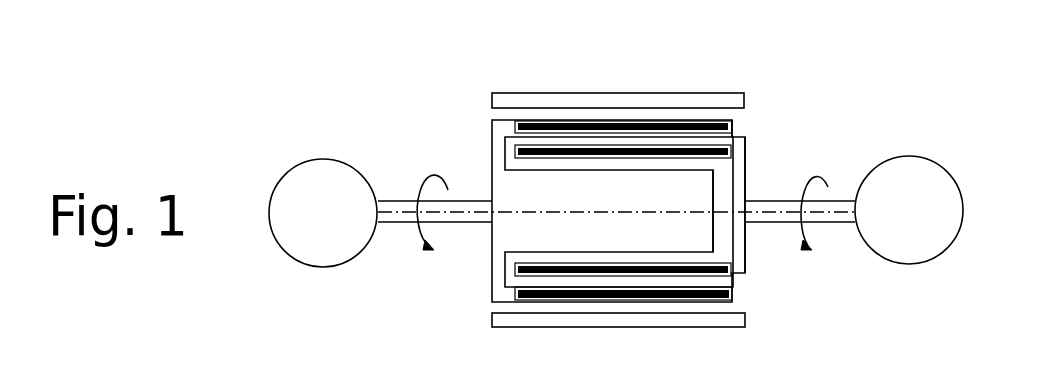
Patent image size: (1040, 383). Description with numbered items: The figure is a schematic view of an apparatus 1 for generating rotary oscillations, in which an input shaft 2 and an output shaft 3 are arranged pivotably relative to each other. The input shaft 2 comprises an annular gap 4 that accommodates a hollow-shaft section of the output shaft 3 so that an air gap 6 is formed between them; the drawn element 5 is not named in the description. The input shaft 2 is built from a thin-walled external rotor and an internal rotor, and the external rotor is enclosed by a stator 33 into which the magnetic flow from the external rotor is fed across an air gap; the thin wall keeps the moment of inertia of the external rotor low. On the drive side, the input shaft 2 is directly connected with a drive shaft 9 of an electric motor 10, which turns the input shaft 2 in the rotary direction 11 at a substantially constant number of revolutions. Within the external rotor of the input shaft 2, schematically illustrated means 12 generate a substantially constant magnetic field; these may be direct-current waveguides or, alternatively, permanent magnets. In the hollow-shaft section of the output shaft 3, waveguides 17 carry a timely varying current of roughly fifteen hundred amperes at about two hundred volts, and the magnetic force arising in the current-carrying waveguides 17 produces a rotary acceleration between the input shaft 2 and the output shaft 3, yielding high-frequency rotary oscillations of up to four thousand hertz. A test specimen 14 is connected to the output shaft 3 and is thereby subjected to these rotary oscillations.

The apparatus for generating rotary oscillations 1 is at (521, 345).
The input shaft 2 is at (498, 157).
The output shaft 3 is at (829, 198).
The annular gap 4 is at (729, 138).
The rotor side wall 5 is at (733, 270).
The air gap 6 is at (617, 275).
The drive shaft 9 is at (398, 205).
The electric motor 10 is at (320, 167).
The rotary direction 11 is at (430, 176).
The means for generating a substantially constant magnetic field 12 is at (527, 127).
The test specimen 14 is at (957, 180).
The waveguides 17 is at (578, 148).
The stator 33 is at (633, 102).